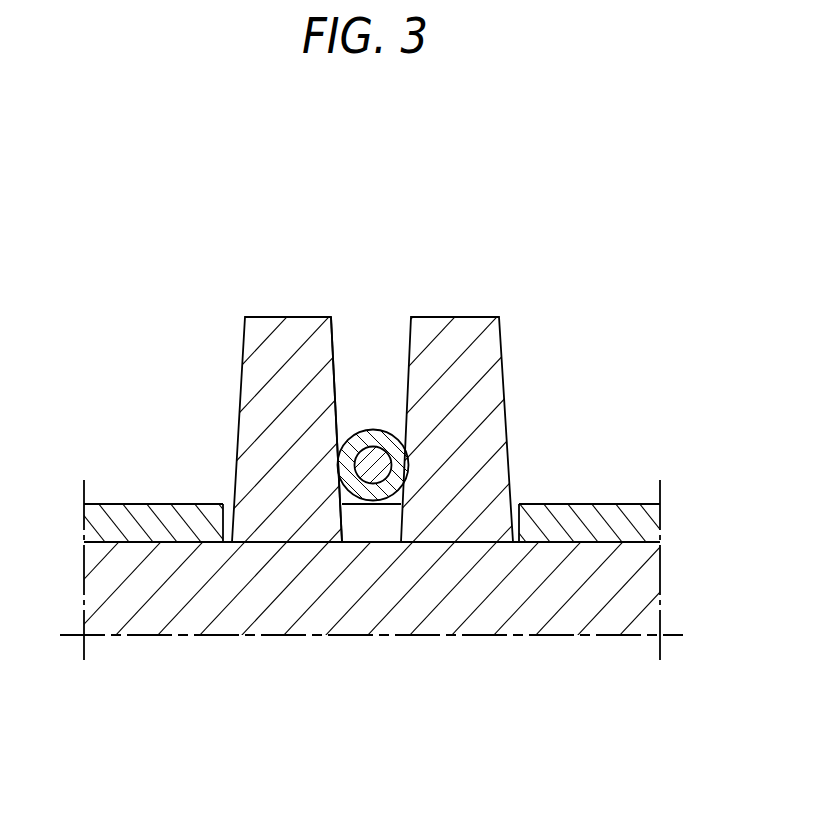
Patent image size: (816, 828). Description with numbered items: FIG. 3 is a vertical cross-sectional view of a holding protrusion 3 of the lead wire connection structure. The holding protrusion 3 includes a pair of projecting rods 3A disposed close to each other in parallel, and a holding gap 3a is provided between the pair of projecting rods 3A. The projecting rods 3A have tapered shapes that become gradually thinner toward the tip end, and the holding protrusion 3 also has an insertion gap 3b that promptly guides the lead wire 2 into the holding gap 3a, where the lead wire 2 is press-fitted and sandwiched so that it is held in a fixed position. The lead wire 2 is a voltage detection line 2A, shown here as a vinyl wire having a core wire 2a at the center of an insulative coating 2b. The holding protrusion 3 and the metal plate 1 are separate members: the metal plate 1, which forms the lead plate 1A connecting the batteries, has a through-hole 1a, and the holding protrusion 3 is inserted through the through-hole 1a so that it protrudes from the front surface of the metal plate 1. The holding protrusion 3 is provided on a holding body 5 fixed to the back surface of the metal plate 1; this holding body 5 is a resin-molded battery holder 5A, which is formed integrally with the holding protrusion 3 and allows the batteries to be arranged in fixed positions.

The holding protrusion 3 is at (528, 184).
The projecting rod 3A is at (293, 355).
The insertion gap 3b is at (381, 323).
The holding gap 3a is at (338, 473).
The metal plate 1 is at (384, 478).
The lead plate 1A is at (587, 522).
The through-hole 1a is at (513, 502).
The holding body 5 is at (408, 528).
The battery holder 5A is at (263, 597).
The lead wire 2 is at (390, 575).
The voltage detection line 2A is at (483, 710).
The core wire 2a is at (378, 472).
The insulative coating 2b is at (378, 490).